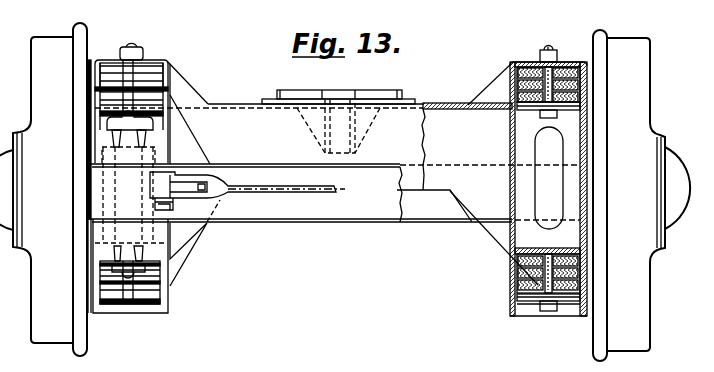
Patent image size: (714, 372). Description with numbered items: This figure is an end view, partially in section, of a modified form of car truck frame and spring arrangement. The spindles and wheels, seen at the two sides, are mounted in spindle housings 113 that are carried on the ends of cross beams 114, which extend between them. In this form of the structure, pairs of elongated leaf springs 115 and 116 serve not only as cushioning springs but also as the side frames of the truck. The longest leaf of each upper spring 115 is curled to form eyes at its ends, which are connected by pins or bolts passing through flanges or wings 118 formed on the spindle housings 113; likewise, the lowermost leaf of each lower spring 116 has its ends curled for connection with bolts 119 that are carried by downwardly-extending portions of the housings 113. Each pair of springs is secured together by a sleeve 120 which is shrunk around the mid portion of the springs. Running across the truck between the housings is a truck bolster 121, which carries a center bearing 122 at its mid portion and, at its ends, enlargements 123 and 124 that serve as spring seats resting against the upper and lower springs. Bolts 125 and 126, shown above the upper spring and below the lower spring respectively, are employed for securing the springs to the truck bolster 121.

The spindle housing 113 is at (160, 155).
The cross beam 114 is at (273, 173).
The leaf spring 115 is at (110, 80).
The leaf spring 116 is at (115, 305).
The flange 118 is at (170, 89).
The bolt 119 is at (167, 296).
The sleeve 120 is at (526, 108).
The truck bolster 121 is at (474, 203).
The center bearing 122 is at (366, 99).
The enlargement 123 is at (512, 85).
The enlargement 124 is at (510, 260).
The bolt 125 is at (134, 55).
The bolt 126 is at (540, 309).